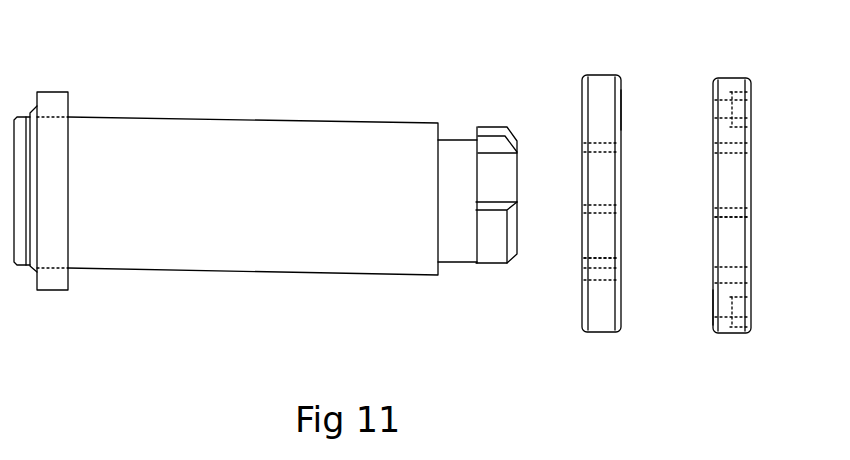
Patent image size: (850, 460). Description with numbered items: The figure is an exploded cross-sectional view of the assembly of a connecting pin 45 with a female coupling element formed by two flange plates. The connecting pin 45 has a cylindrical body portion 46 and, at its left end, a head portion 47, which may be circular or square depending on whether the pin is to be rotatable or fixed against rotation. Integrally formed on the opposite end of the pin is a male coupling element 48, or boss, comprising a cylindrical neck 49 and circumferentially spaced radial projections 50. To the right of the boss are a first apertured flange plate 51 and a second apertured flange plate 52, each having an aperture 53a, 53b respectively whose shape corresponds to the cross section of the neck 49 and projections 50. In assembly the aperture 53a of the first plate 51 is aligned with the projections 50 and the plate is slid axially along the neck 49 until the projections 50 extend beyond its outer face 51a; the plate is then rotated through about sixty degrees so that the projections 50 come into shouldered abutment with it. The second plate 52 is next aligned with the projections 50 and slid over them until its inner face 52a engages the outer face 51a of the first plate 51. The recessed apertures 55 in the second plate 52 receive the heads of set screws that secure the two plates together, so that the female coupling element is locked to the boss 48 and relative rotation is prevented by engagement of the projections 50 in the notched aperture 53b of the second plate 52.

The connecting pin 45 is at (226, 241).
The cylindrical body portion 46 is at (244, 242).
The head portion 47 is at (53, 284).
The male coupling element 48 is at (487, 217).
The cylindrical neck 49 is at (457, 251).
The radial projections 50 is at (493, 127).
The first apertured flange plate 51 is at (635, 194).
The outer face of plate 51 51a is at (623, 110).
The second apertured flange plate 52 is at (753, 197).
The inner face of plate 52 52a is at (710, 314).
The aperture of plate 51 53a is at (602, 222).
The aperture of plate 52 53b is at (737, 222).
The recessed apertures 55 is at (741, 110).